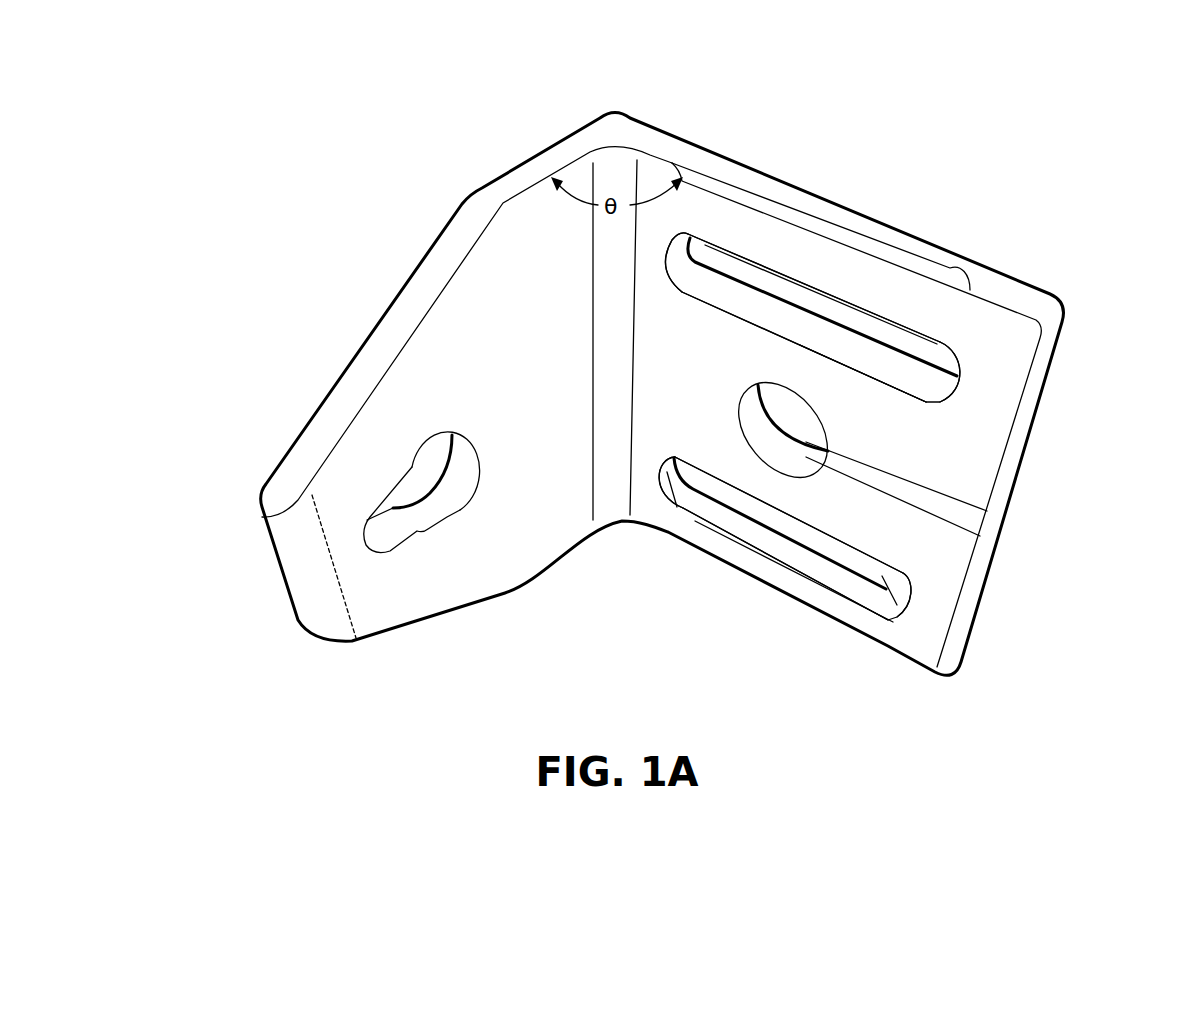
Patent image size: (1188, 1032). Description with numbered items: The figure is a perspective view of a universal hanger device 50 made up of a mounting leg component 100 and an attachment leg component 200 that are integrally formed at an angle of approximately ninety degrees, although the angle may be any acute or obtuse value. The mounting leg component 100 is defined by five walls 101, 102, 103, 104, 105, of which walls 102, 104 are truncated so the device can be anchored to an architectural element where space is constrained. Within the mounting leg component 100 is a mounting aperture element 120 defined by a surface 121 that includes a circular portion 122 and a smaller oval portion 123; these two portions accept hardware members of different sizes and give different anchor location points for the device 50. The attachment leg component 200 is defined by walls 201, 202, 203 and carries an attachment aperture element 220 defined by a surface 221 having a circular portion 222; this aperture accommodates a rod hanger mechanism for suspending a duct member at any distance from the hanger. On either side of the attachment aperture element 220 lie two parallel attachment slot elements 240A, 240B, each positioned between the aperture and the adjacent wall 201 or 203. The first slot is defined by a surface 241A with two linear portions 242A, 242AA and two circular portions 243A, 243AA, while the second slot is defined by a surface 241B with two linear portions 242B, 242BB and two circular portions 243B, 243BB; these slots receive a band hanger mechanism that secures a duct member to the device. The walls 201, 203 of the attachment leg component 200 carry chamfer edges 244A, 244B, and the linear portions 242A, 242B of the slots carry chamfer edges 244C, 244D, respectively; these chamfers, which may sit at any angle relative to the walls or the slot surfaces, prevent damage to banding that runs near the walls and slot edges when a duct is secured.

The universal hanger device 50 is at (1027, 137).
The mounting leg component 100 is at (425, 403).
The wall 101 is at (523, 172).
The wall 102 is at (381, 333).
The wall 103 is at (297, 552).
The wall 104 is at (421, 621).
The wall 105 is at (561, 553).
The mounting aperture element 120 is at (418, 484).
The surface 121 is at (442, 508).
The circular portion 122 is at (412, 464).
The oval portion 123 is at (370, 515).
The attachment leg component 200 is at (997, 358).
The wall 201 is at (827, 212).
The wall 202 is at (1010, 469).
The wall 203 is at (777, 588).
The attachment aperture element 220 is at (808, 424).
The surface 221 is at (987, 511).
The circular portion 222 is at (980, 536).
The attachment slot element 240A is at (930, 357).
The attachment slot element 240B is at (955, 664).
The surface 241A is at (930, 357).
The surface 241B is at (872, 595).
The linear portion 242A is at (720, 237).
The linear portion 242AA is at (728, 293).
The linear portion 242B is at (703, 522).
The linear portion 242BB is at (757, 498).
The circular portion 243A is at (947, 388).
The circular portion 243AA is at (673, 255).
The circular portion 243B is at (897, 604).
The circular portion 243BB is at (663, 529).
The chamfer edge 244A is at (877, 250).
The chamfer edge 244B is at (850, 630).
The chamfer edge 244C is at (895, 363).
The chamfer edge 244D is at (793, 574).